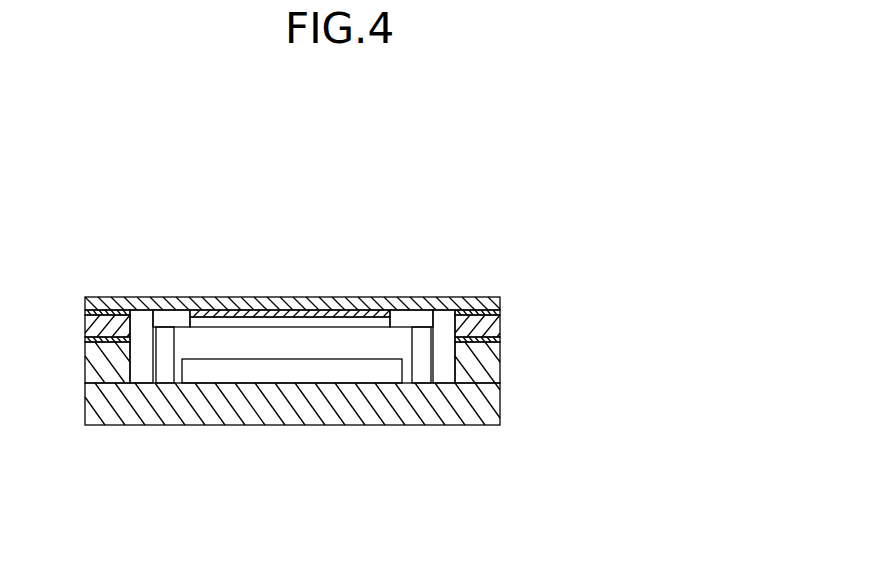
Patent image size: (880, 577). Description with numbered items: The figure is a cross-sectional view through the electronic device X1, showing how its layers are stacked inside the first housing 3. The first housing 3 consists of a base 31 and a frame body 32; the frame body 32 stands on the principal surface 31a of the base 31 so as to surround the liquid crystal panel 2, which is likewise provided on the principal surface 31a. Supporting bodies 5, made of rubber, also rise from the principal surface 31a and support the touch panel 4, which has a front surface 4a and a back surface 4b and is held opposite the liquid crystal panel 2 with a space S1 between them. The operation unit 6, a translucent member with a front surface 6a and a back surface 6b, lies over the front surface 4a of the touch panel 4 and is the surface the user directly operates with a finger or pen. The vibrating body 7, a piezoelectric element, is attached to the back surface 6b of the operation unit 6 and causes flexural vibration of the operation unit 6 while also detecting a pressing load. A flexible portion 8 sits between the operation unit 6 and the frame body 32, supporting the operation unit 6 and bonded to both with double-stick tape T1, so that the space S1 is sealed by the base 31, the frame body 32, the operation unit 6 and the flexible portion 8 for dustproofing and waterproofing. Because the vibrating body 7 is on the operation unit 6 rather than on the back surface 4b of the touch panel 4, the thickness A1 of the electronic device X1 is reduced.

The electronic device X1 is at (483, 147).
The liquid crystal panel 2 is at (272, 370).
The first housing 3 is at (292, 431).
The base 31 is at (152, 417).
The principal surface 31a is at (137, 383).
The frame body 32 is at (100, 365).
The touch panel 4 is at (295, 323).
The front surface 4a is at (328, 336).
The back surface 4b is at (362, 330).
The supporting body 5 is at (167, 350).
The operation unit 6 is at (210, 297).
The front surface 6a is at (231, 297).
The back surface 6b is at (248, 315).
The vibrating body 7 is at (362, 330).
The flexible portion 8 is at (85, 333).
The space S1 is at (375, 347).
The double-stick tape T1 is at (85, 305).
The thickness A1 is at (503, 297).